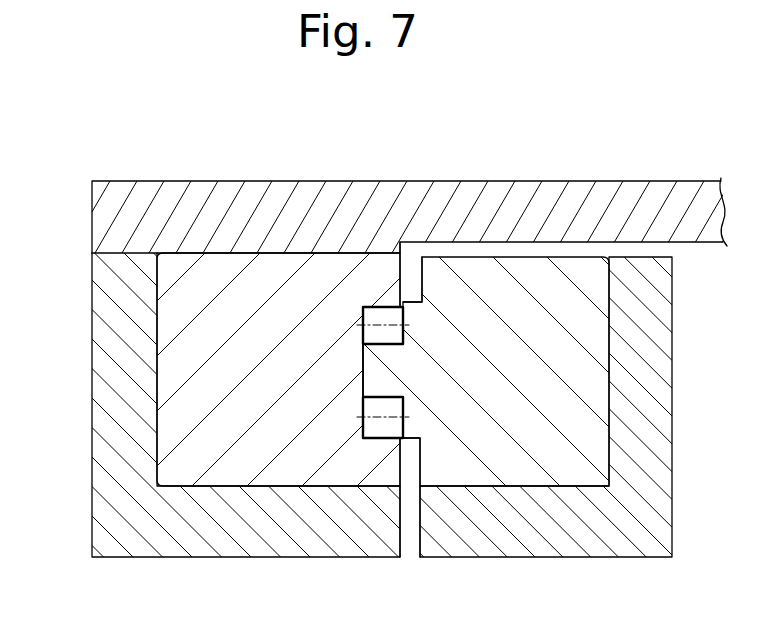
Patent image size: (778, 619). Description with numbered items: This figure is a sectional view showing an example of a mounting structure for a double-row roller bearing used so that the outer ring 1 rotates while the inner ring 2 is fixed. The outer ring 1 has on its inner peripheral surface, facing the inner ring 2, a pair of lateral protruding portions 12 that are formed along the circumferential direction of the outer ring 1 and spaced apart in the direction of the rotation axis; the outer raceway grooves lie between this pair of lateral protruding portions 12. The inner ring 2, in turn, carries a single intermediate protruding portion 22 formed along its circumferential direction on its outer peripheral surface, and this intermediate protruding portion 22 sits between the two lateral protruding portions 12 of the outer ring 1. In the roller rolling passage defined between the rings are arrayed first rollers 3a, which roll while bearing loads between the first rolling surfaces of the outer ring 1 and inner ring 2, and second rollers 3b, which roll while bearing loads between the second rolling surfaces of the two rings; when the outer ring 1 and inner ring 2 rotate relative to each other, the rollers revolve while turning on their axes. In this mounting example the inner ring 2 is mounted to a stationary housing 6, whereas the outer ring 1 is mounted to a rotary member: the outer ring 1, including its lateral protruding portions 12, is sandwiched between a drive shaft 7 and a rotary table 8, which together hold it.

The outer ring 1 is at (210, 262).
The inner ring 2 is at (535, 267).
The first rollers 3a is at (378, 325).
The second rollers 3b is at (362, 426).
The stationary housing 6 is at (653, 441).
The drive shaft 7 is at (100, 457).
The rotary table 8 is at (329, 196).
The lateral protruding portions 12 is at (383, 270).
The intermediate protruding portion 22 is at (383, 380).